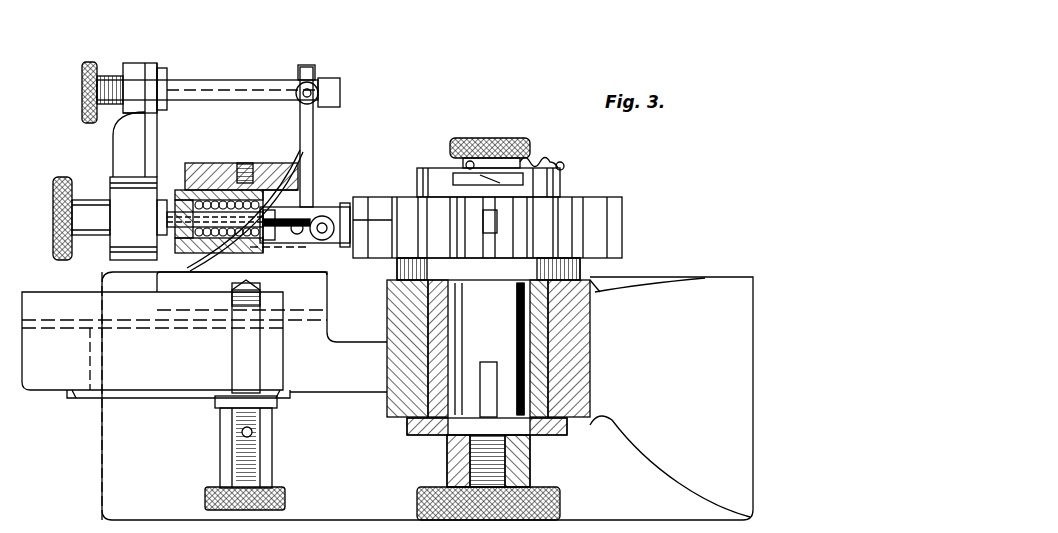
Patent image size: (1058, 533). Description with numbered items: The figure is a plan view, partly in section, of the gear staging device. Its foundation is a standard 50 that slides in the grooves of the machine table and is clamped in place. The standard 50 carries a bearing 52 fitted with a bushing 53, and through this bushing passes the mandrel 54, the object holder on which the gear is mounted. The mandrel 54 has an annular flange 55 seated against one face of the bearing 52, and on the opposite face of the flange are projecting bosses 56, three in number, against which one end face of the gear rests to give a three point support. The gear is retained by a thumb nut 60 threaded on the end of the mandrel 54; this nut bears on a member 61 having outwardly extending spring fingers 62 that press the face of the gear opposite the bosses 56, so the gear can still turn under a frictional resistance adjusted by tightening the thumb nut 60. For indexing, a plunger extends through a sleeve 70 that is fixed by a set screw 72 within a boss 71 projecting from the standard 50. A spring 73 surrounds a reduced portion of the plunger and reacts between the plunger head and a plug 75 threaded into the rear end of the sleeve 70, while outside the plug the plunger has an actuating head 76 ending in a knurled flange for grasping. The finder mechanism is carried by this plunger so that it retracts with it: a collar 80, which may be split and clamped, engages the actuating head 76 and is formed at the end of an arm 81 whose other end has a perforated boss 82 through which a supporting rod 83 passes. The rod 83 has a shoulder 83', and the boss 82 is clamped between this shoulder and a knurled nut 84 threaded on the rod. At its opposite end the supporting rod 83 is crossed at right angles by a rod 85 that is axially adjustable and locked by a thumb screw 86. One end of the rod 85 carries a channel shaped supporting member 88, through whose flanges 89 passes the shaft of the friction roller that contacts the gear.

The standard 50 is at (387, 396).
The bearing 52 is at (580, 345).
The bushing 53 is at (542, 383).
The mandrel 54 is at (548, 420).
The annular flange 55 is at (585, 262).
The projecting bosses 56 is at (413, 256).
The thumb nut 60 is at (515, 140).
The member 61 is at (548, 160).
The spring fingers 62 is at (465, 163).
The sleeve 70 is at (180, 195).
The boss 71 is at (212, 165).
The set screw 72 is at (250, 163).
The spring 73 is at (292, 176).
The plug 75 is at (85, 205).
The actuating head 76 is at (55, 188).
The collar 80 is at (110, 250).
The arm 81 is at (128, 155).
The perforated boss 82 is at (143, 63).
The shoulder 83' is at (182, 69).
The supporting rod 83 is at (218, 80).
The knurled nut 84 is at (92, 62).
The rod 85 is at (318, 125).
The thumb screw 86 is at (320, 84).
The channel shaped supporting member 88 is at (322, 193).
The flanges 89 is at (297, 208).